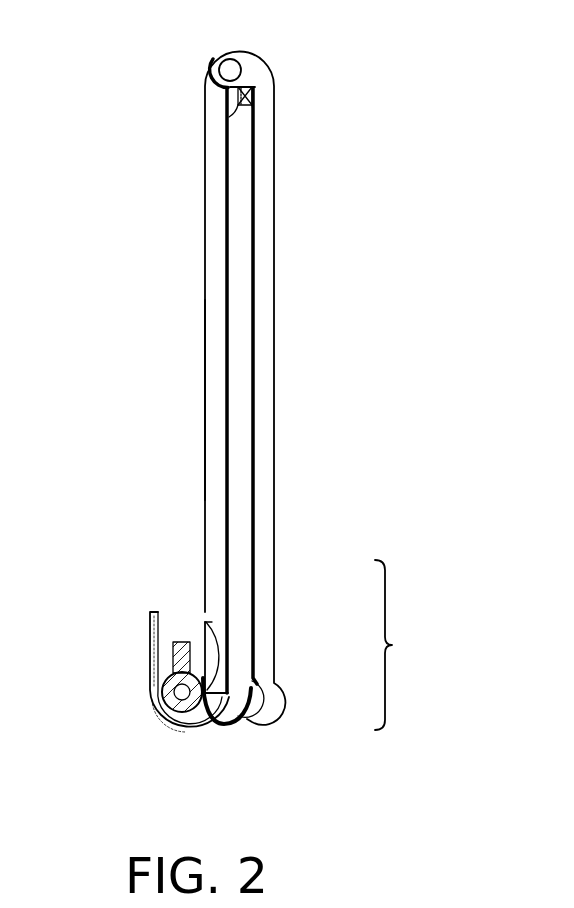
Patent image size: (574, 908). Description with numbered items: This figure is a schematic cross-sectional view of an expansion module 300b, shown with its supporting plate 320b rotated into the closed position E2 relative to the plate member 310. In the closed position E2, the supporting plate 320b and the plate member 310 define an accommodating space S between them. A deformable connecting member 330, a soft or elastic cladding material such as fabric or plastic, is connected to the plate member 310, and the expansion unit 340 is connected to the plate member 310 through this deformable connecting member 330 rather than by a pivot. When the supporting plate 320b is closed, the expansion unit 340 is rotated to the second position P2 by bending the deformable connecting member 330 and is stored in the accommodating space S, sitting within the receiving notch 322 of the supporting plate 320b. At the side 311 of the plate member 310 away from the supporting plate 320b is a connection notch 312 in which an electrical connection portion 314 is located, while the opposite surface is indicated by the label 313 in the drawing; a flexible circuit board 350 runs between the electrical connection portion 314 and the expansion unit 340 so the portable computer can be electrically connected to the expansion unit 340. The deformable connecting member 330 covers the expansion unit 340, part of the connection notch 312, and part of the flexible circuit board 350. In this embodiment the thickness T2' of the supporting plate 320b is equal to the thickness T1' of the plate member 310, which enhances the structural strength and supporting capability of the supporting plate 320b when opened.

The expansion module 300b is at (413, 645).
The plate member 310 is at (217, 580).
The side 311 is at (204, 420).
The inner surface of display panel 313 is at (230, 400).
The connection notch 312 is at (158, 632).
The electrical connection portion 314 is at (173, 660).
The receiving notch 322 is at (165, 718).
The deformable connecting member 330 is at (255, 650).
The expansion unit 340 is at (240, 610).
The flexible circuit board 350 is at (262, 730).
The supporting plate 320b is at (265, 685).
The accommodating space S is at (233, 193).
The thickness of the plate member T1' is at (183, 105).
The thickness of the supporting plate T2' is at (279, 129).
The closed position E2 is at (305, 46).
The second position P2 is at (225, 780).